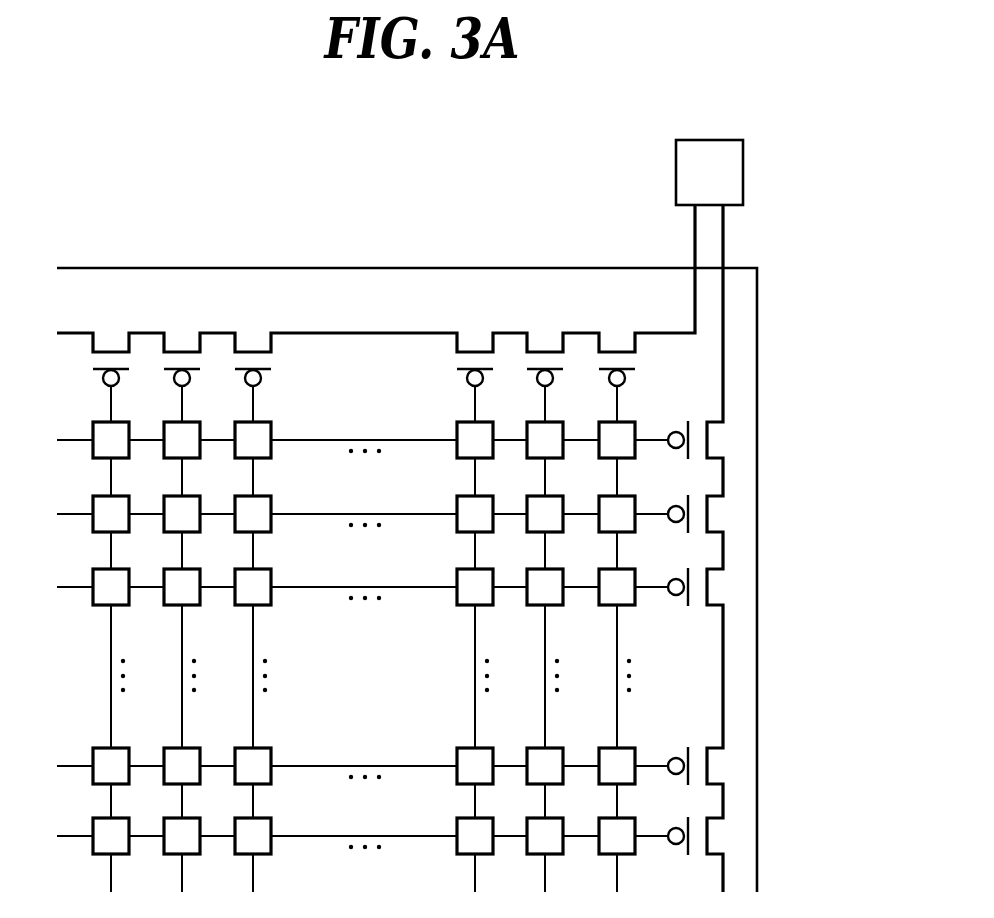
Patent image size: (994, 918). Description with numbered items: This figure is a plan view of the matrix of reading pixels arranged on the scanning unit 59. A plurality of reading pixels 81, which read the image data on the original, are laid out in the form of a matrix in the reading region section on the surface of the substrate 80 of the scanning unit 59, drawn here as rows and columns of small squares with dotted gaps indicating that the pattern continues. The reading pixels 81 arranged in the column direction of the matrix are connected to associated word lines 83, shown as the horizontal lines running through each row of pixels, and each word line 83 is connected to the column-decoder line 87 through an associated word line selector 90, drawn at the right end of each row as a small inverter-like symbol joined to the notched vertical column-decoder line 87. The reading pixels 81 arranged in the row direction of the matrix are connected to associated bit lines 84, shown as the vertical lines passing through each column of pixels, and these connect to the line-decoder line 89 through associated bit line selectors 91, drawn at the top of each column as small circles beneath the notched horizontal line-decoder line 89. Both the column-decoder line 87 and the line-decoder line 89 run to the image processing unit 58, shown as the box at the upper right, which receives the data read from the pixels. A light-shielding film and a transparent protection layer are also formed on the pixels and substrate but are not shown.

The image processing unit 58 is at (708, 140).
The scanning unit 59 is at (326, 220).
The substrate 80 is at (385, 267).
The reading pixel 81 is at (129, 458).
The word line 83 is at (656, 764).
The bit line 84 is at (113, 420).
The column-decoder line 87 is at (722, 366).
The line-decoder line 89 is at (668, 332).
The word line selector 90 is at (698, 440).
The bit line selector 91 is at (112, 358).